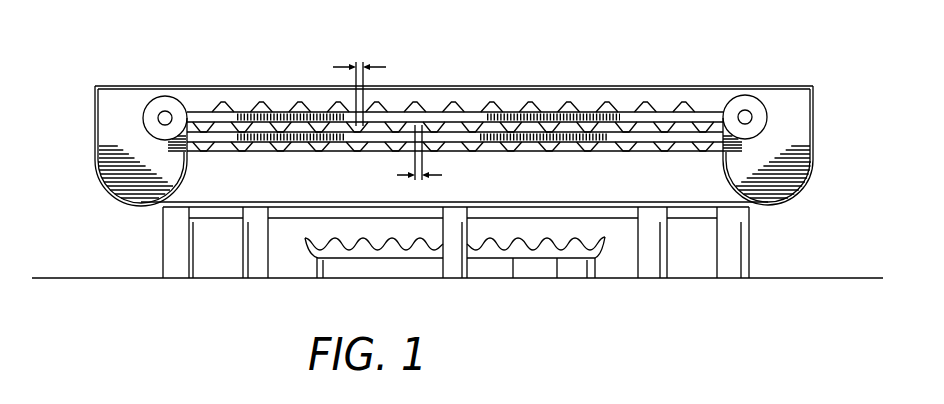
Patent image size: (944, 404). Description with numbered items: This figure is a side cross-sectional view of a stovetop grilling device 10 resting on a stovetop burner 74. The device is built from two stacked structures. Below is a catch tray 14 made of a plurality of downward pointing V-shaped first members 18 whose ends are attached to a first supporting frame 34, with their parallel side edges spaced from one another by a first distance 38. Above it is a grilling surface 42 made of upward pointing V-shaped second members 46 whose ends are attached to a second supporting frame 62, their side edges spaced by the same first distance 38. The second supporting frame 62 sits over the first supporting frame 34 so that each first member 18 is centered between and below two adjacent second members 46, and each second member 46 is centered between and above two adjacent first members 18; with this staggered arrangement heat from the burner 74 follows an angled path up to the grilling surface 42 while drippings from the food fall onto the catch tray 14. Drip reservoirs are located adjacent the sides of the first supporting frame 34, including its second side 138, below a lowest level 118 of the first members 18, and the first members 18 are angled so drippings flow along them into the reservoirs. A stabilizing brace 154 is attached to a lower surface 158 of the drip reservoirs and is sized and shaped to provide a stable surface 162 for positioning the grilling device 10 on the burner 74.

The stovetop grilling device 10 is at (780, 66).
The catch tray 14 is at (513, 150).
The first members 18 is at (590, 148).
The first supporting frame 34 is at (222, 140).
The first distance 38 is at (359, 62).
The grilling surface 42 is at (655, 107).
The second members 46 is at (570, 107).
The second supporting frame 62 is at (202, 112).
The stovetop burner 74 is at (567, 268).
The lowest level 118 is at (333, 140).
The second side 138 is at (725, 150).
The stabilizing brace 154 is at (225, 202).
The lower surface 158 is at (183, 200).
The stable surface 162 is at (660, 205).